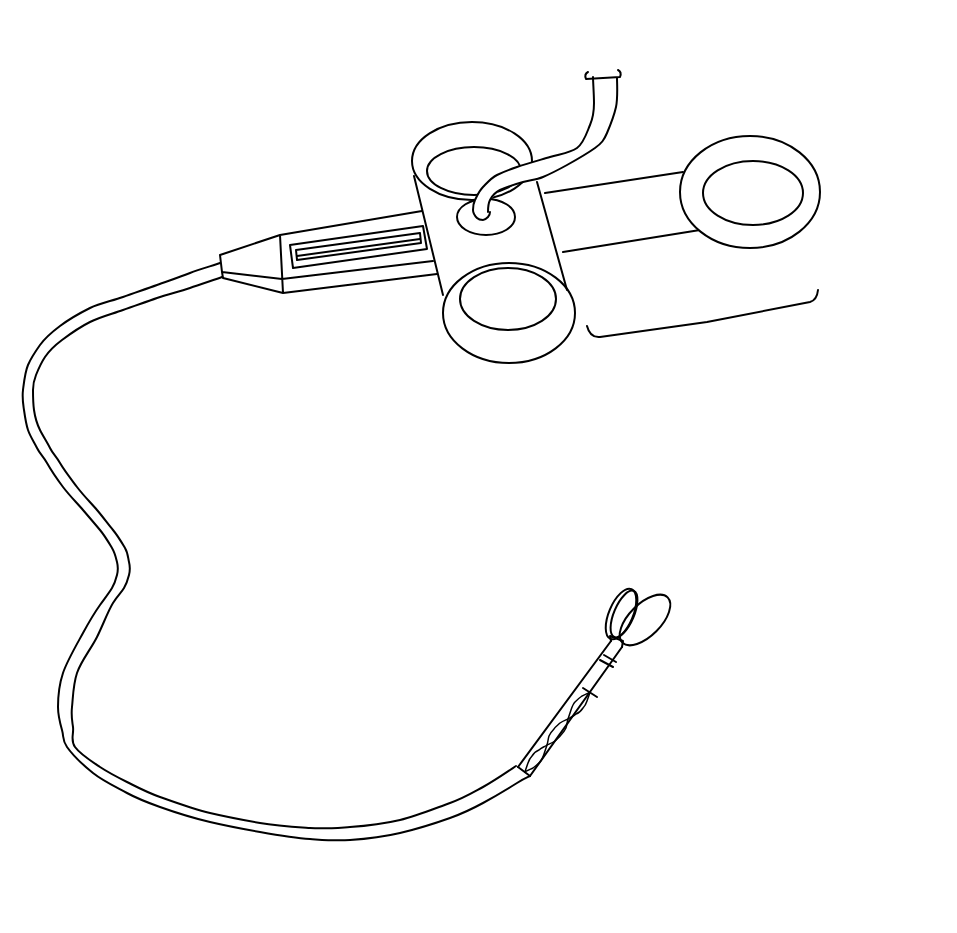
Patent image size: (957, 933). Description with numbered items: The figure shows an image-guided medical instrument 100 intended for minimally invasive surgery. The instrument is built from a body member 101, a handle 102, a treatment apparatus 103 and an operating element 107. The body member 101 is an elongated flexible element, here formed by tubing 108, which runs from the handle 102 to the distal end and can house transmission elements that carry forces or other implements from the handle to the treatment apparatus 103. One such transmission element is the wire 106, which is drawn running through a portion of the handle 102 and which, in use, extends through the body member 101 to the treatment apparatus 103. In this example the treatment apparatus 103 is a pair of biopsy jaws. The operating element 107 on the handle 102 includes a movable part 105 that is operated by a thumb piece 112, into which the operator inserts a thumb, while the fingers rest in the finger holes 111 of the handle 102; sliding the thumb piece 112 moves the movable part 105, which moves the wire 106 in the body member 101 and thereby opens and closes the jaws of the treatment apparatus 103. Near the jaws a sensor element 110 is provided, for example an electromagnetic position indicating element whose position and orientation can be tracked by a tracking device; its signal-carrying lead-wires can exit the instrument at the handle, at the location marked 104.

The image-guided medical instrument 100 is at (147, 188).
The body member 101 is at (139, 562).
The handle 102 is at (388, 317).
The treatment apparatus 103 is at (663, 623).
The lead-wire exit 104 is at (615, 87).
The movable part 105 is at (625, 178).
The wire 106 is at (364, 247).
The operating element 107 is at (707, 322).
The tubing 108 is at (62, 467).
The sensor element 110 is at (597, 673).
The finger holes 111 is at (428, 37).
The thumb piece 112 is at (767, 163).